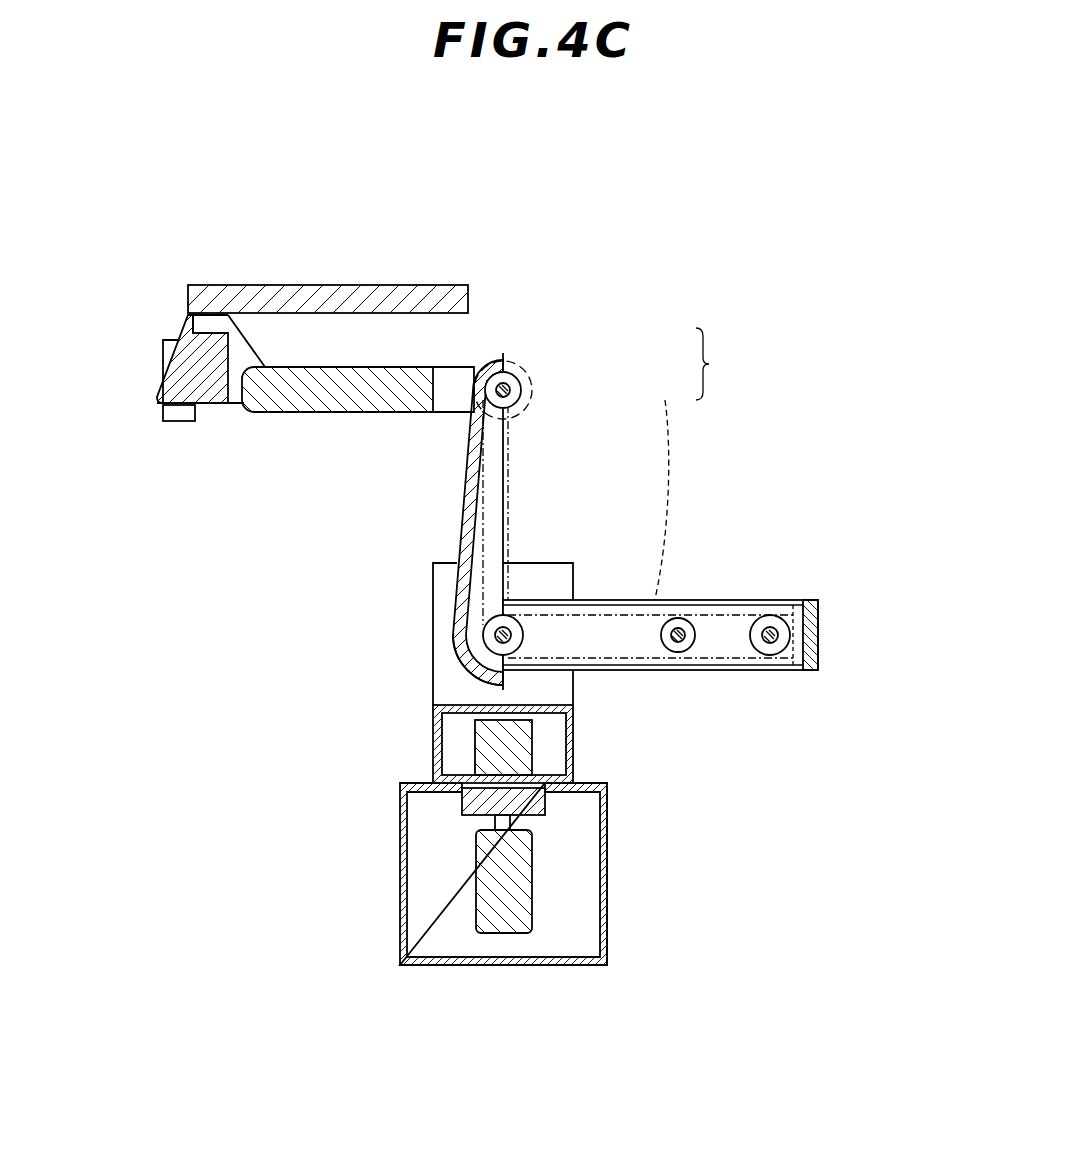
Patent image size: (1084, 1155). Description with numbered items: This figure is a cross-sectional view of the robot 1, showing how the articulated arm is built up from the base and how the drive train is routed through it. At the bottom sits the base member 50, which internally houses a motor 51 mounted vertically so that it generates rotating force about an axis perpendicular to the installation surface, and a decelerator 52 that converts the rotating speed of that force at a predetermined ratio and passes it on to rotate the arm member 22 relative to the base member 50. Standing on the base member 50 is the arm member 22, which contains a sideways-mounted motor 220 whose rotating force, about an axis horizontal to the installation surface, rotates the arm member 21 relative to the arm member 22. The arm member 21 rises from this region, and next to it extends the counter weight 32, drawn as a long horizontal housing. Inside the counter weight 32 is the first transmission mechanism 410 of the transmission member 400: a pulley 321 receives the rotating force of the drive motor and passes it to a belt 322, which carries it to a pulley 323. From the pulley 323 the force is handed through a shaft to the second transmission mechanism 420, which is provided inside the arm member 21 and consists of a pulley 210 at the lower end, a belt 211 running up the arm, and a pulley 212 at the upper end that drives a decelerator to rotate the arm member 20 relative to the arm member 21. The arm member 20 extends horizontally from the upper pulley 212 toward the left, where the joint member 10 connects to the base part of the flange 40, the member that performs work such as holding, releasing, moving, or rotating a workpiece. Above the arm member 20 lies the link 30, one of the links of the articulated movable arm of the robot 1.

The robot 1 is at (798, 268).
The joint member 10 is at (183, 328).
The arm member 20 is at (372, 378).
The arm member 21 is at (463, 498).
The arm member 22 is at (577, 738).
The link 30 is at (358, 293).
The counter weight 32 is at (817, 640).
The flange 40 is at (180, 412).
The base member 50 is at (582, 965).
The motor 51 is at (532, 867).
The decelerator 52 is at (463, 815).
The pulley 210 is at (487, 640).
The belt 211 is at (487, 458).
The pulley 212 is at (510, 370).
The motor 220 is at (473, 747).
The pulley 321 is at (782, 623).
The belt 322 is at (710, 612).
The pulley 323 is at (514, 627).
The transmission member 400 is at (729, 364).
The first transmission mechanism 410 is at (668, 490).
The second transmission mechanism 420 is at (532, 387).